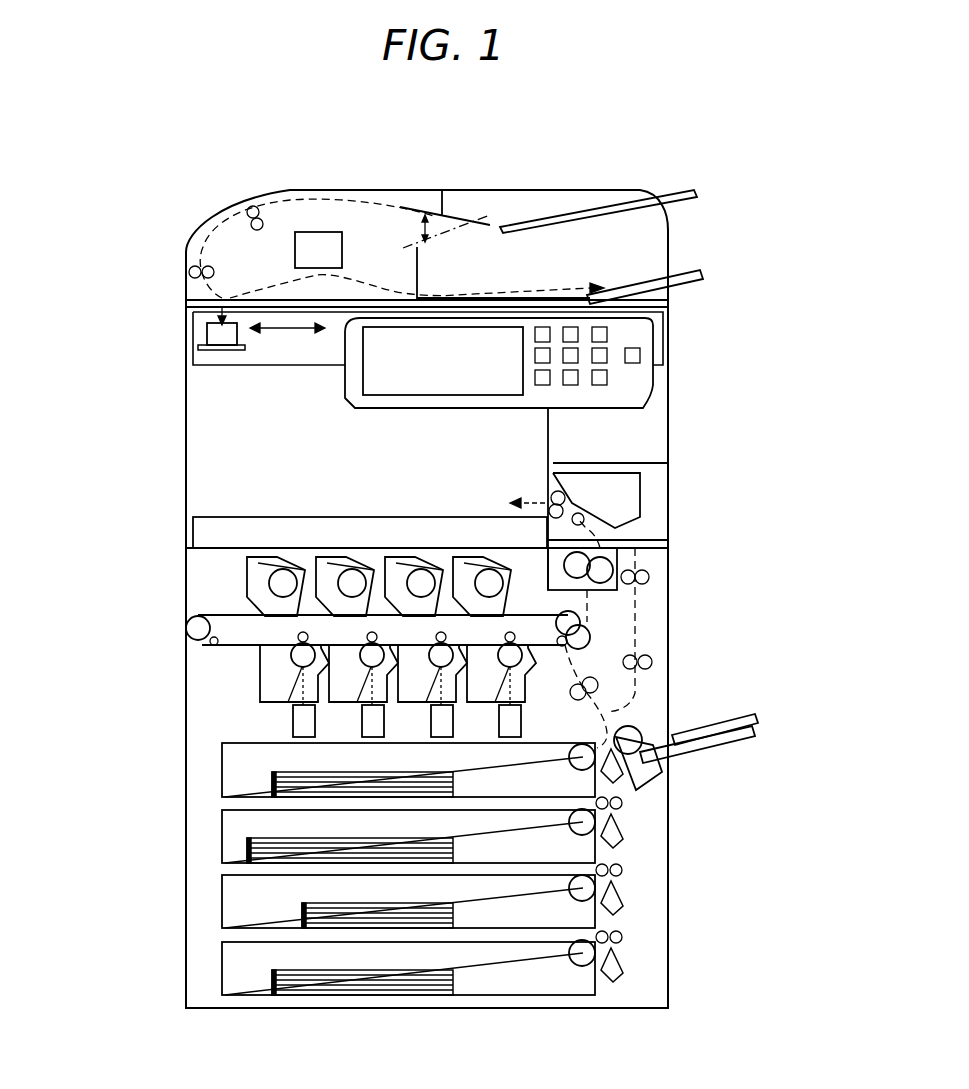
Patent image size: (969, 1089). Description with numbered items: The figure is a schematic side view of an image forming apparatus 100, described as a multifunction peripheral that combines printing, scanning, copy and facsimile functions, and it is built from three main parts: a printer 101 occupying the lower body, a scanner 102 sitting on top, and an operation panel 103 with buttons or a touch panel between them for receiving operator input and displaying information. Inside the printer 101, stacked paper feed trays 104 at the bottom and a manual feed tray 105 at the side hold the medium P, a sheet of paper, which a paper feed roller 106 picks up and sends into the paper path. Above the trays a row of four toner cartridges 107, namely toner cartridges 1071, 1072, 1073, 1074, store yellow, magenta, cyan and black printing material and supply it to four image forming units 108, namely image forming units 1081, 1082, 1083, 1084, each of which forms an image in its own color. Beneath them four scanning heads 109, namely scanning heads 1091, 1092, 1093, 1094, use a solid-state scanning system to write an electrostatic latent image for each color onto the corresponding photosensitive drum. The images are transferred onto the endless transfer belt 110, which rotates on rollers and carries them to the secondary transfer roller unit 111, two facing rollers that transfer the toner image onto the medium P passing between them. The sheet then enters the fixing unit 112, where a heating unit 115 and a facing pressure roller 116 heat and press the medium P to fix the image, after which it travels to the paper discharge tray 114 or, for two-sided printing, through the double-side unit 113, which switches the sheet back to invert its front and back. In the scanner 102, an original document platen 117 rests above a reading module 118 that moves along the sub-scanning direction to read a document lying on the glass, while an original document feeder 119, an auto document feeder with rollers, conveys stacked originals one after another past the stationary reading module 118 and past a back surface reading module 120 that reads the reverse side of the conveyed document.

The image forming apparatus 100 is at (652, 160).
The printer 101 is at (696, 690).
The scanner 102 is at (172, 236).
The operation panel 103 is at (644, 404).
The paper feed tray 104 is at (587, 988).
The manual feed tray 105 is at (693, 752).
The paper feed roller 106 is at (640, 752).
The toner cartridge 107 is at (110, 552).
The toner cartridge 1071 is at (258, 578).
The toner cartridge 1072 is at (326, 598).
The toner cartridge 1073 is at (395, 602).
The toner cartridge 1074 is at (466, 602).
The image forming unit 108 is at (110, 650).
The image forming unit 1081 is at (261, 660).
The image forming unit 1082 is at (330, 675).
The image forming unit 1083 is at (399, 680).
The image forming unit 1084 is at (468, 690).
The scanning head 109 is at (110, 748).
The scanning head 1091 is at (293, 718).
The scanning head 1092 is at (362, 714).
The scanning head 1093 is at (431, 716).
The scanning head 1094 is at (499, 718).
The transfer belt 110 is at (636, 612).
The secondary transfer roller unit 111 is at (580, 622).
The fixing unit 112 is at (583, 552).
The double-side unit 113 is at (647, 644).
The paper discharge tray 114 is at (500, 565).
The heating unit 115 is at (617, 560).
The pressure roller 116 is at (617, 566).
The original document platen 117 is at (183, 305).
The reading module 118 is at (206, 340).
The original document feeder 119 is at (187, 262).
The back surface reading module 120 is at (318, 238).
The medium P is at (272, 970).